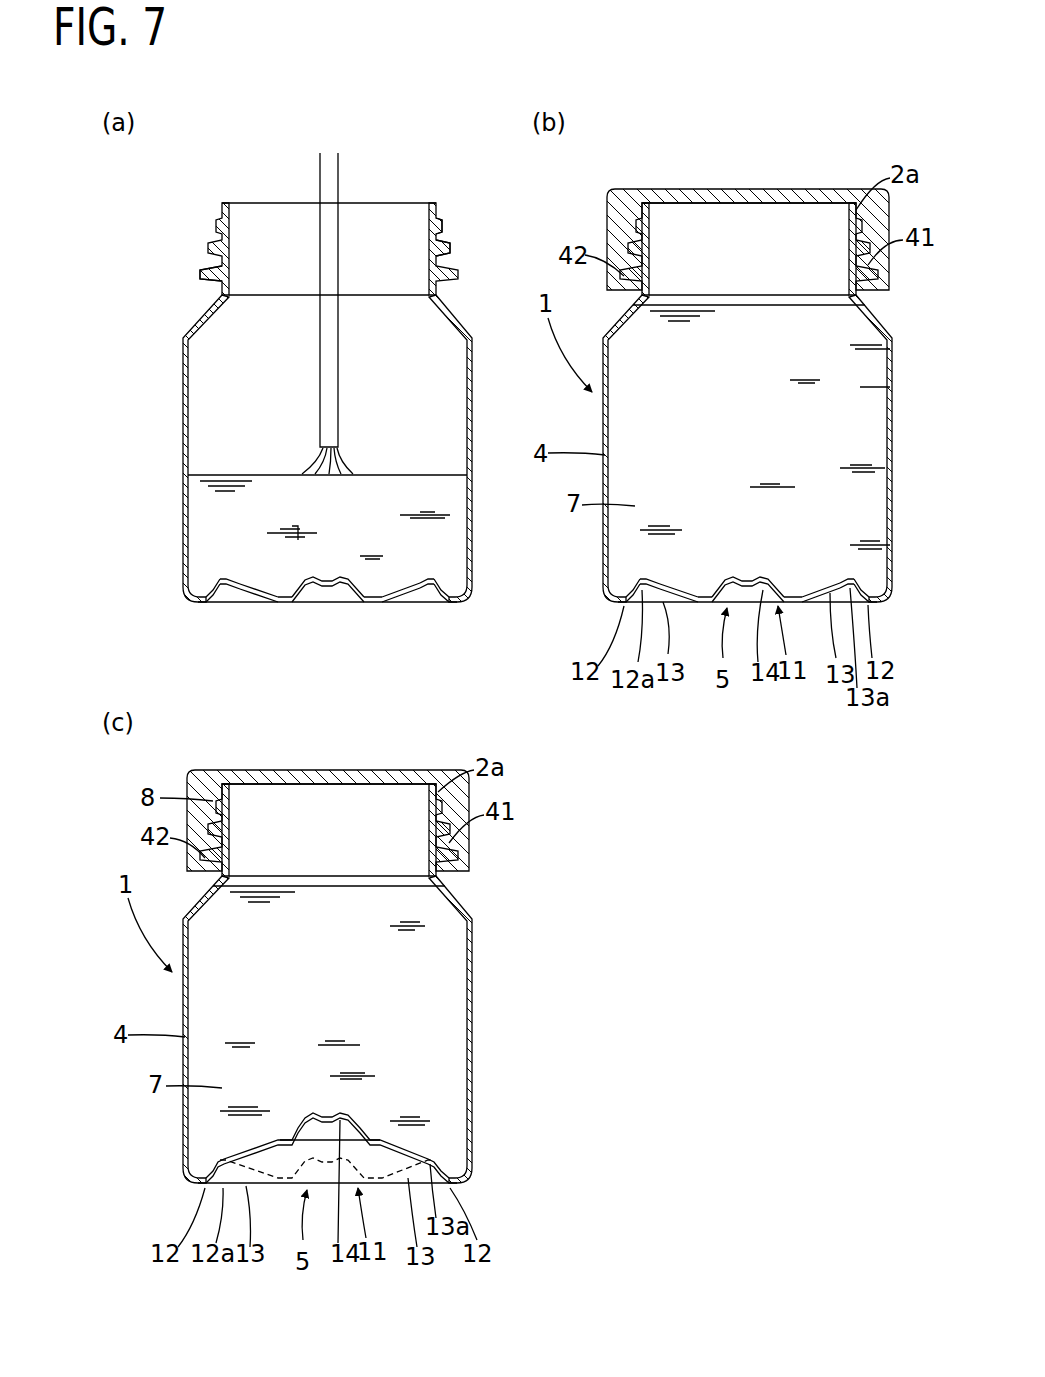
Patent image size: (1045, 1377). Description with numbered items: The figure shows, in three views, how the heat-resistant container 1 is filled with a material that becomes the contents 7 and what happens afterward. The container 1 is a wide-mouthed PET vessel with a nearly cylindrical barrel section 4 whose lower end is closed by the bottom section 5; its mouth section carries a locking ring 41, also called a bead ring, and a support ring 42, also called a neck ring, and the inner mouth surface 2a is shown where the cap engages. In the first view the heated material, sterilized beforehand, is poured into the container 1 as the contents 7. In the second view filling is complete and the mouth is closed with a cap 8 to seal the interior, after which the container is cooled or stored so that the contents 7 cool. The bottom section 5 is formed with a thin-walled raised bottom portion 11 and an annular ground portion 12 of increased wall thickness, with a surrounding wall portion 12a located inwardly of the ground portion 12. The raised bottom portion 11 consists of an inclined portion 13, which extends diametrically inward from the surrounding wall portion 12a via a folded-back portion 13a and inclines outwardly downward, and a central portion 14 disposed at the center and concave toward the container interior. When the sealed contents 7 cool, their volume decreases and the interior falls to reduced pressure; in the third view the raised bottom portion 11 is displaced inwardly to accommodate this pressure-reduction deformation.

The heat-resistant container 1 is at (172, 392).
The mouth portion 2a is at (437, 209).
The barrel section 4 is at (185, 455).
The bottom section 5 is at (307, 608).
The contents 7 is at (343, 463).
The cap 8 is at (608, 213).
The raised bottom portion 11 is at (358, 606).
The ground portion 12 is at (204, 606).
The surrounding wall portion 12a is at (222, 590).
The inclined portion 13 is at (243, 602).
The folded-back portion 13a is at (430, 588).
The central portion 14 is at (343, 590).
The locking ring 41 is at (448, 252).
The support ring 42 is at (200, 275).